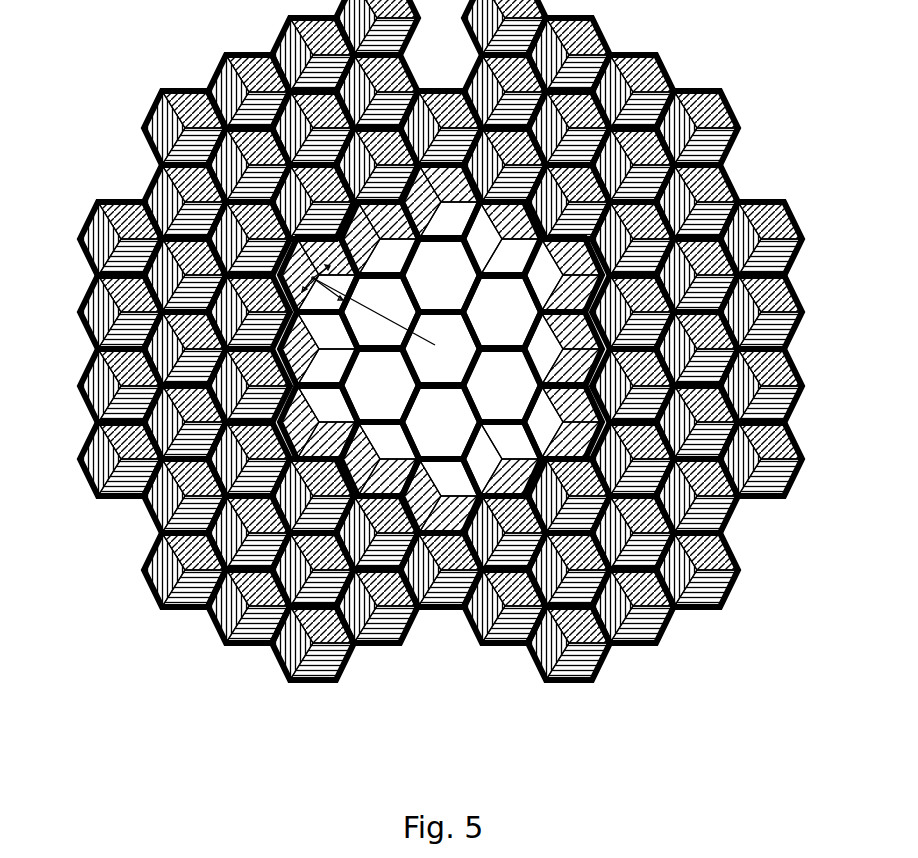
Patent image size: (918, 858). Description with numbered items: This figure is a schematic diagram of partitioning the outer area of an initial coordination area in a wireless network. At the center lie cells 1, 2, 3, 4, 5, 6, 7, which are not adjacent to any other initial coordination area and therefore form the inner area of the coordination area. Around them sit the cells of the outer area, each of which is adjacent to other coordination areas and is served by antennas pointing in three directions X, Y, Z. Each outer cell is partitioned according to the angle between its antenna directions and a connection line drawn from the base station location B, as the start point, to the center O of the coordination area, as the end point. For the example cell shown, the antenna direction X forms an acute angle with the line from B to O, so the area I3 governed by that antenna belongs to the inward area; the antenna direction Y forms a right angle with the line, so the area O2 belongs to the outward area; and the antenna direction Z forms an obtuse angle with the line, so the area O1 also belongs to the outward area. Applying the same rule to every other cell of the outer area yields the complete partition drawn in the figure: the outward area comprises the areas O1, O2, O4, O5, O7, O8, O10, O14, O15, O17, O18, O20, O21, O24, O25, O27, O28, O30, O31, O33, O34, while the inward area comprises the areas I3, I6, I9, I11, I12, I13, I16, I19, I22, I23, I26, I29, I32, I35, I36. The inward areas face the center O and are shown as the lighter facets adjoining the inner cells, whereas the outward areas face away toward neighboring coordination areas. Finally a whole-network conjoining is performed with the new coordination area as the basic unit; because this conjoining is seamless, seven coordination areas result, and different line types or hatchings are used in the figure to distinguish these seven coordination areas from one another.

The cell 1 is at (441, 349).
The cell 2 is at (502, 312).
The cell 3 is at (502, 385).
The cell 4 is at (441, 422).
The cell 5 is at (380, 385).
The cell 6 is at (380, 312).
The cell 7 is at (441, 275).
The inward area I3 is at (327, 293).
The inward area I6 is at (388, 257).
The inward area I9 is at (449, 220).
The inward area I11 is at (482, 239).
The inward area I12 is at (510, 257).
The inward area I13 is at (543, 275).
The inward area I16 is at (543, 349).
The inward area I19 is at (543, 422).
The inward area I22 is at (482, 459).
The inward area I23 is at (510, 440).
The inward area I26 is at (449, 477).
The inward area I29 is at (388, 440).
The inward area I32 is at (327, 403).
The inward area I35 is at (327, 330).
The inward area I36 is at (327, 367).
The outward area O1 is at (299, 275).
The outward area O2 is at (327, 256).
The outward area O4 is at (360, 239).
The outward area O5 is at (388, 220).
The outward area O7 is at (421, 202).
The outward area O8 is at (449, 183).
The outward area O10 is at (510, 220).
The outward area O14 is at (571, 256).
The outward area O15 is at (571, 293).
The outward area O17 is at (571, 330).
The outward area O18 is at (571, 367).
The outward area O20 is at (571, 403).
The outward area O21 is at (571, 440).
The outward area O24 is at (510, 477).
The outward area O25 is at (421, 496).
The outward area O27 is at (449, 514).
The outward area O28 is at (360, 459).
The outward area O30 is at (388, 477).
The outward area O31 is at (299, 422).
The outward area O33 is at (327, 440).
The outward area O34 is at (299, 349).
The center of the coordination area O is at (374, 318).
The base station location B is at (306, 272).
The antenna direction X is at (331, 294).
The antenna direction Y is at (321, 266).
The antenna direction Z is at (301, 288).